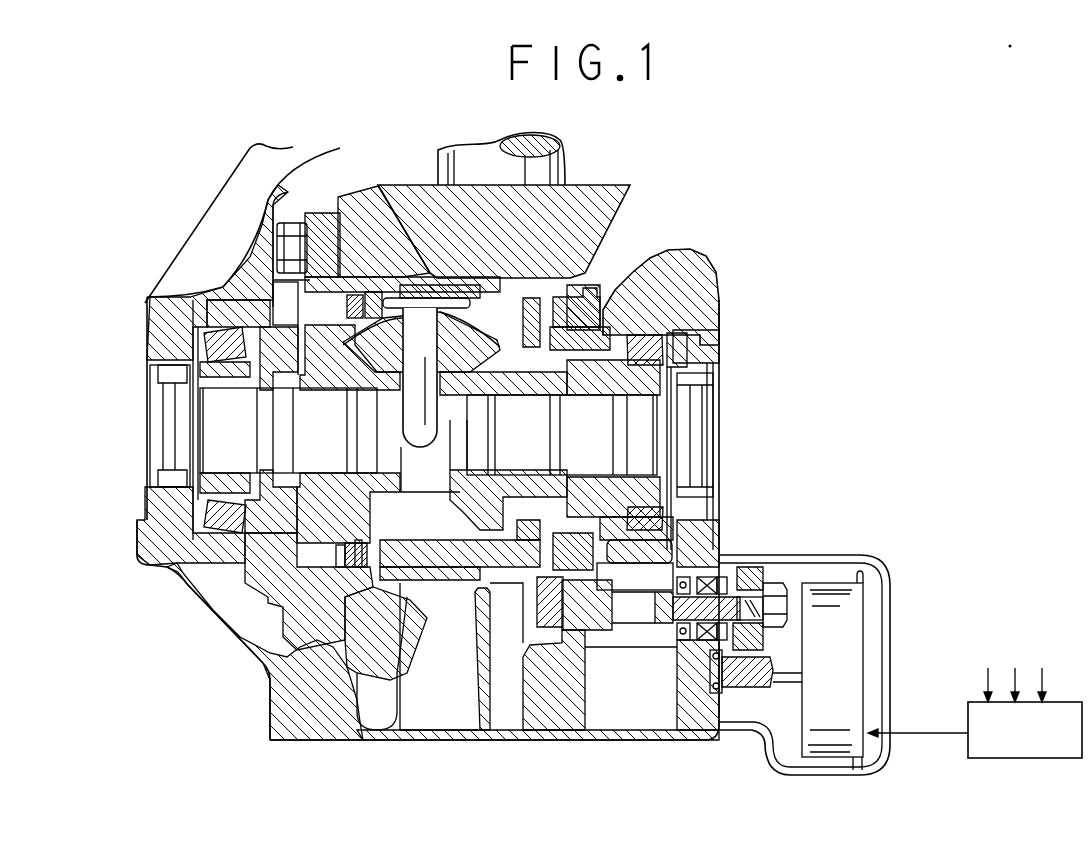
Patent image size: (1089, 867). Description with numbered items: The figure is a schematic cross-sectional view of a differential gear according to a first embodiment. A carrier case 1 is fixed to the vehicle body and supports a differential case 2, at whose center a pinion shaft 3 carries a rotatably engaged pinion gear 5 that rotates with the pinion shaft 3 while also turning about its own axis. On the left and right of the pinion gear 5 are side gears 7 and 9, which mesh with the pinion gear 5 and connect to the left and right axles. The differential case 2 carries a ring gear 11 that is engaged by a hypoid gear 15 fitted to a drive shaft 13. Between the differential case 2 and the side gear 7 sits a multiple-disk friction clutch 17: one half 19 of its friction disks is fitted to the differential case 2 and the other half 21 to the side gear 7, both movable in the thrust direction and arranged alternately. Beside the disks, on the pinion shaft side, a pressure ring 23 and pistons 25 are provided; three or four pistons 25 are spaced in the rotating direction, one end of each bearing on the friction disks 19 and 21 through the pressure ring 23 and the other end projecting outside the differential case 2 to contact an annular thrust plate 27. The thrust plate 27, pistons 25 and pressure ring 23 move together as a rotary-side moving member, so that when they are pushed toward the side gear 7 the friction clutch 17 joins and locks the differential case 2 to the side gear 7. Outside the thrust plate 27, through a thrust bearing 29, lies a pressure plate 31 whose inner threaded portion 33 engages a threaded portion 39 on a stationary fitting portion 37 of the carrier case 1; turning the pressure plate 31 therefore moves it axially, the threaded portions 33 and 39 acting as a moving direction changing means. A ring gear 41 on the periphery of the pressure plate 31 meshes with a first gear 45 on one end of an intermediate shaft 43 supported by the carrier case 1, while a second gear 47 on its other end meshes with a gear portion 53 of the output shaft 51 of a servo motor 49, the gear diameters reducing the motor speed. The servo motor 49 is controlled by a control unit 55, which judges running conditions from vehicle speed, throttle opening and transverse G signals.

The carrier case 1 is at (258, 247).
The differential case 2 is at (325, 222).
The pinion shaft 3 is at (422, 447).
The pinion gear 5 is at (480, 317).
The side gear 7 is at (300, 385).
The side gear 9 is at (533, 387).
The ring gear 11 is at (372, 210).
The drive shaft 13 is at (568, 158).
The hypoid gear 15 is at (570, 190).
The multiple-disk friction clutch 17 is at (313, 550).
The friction disks 19 is at (358, 567).
The friction disks 21 is at (343, 575).
The pressure ring 23 is at (367, 300).
The pistons 25 is at (458, 568).
The thrust plate 27 is at (540, 300).
The thrust bearing 29 is at (535, 565).
The pressure plate 31 is at (613, 293).
The threaded portion 33 is at (557, 520).
The fitting portion 37 is at (690, 443).
The threaded portion 39 is at (635, 565).
The ring gear 41 is at (578, 627).
The intermediate shaft 43 is at (647, 625).
The first gear 45 is at (593, 630).
The second gear 47 is at (748, 573).
The servo motor 49 is at (850, 650).
The output shaft 51 is at (792, 684).
The gear portion 53 is at (747, 693).
The control unit 55 is at (1022, 752).